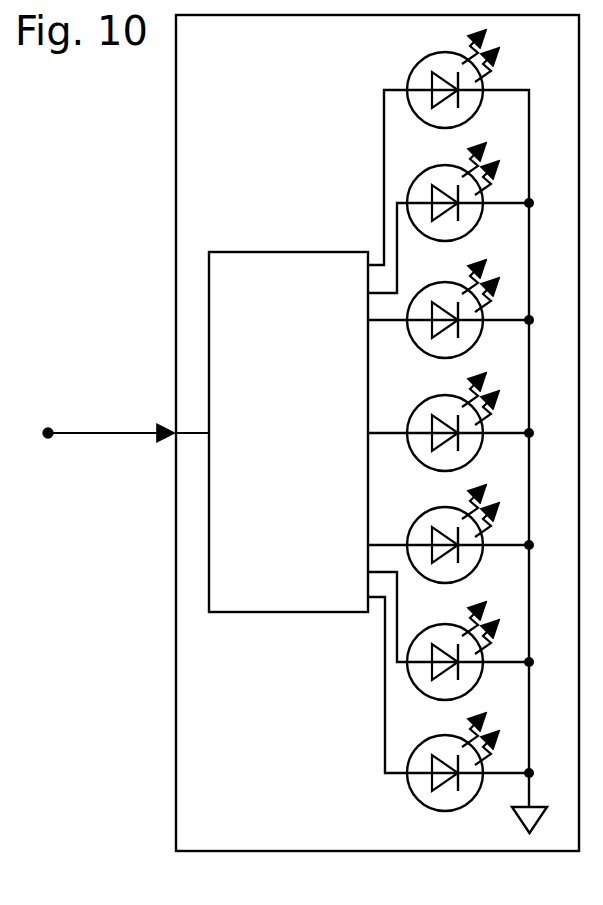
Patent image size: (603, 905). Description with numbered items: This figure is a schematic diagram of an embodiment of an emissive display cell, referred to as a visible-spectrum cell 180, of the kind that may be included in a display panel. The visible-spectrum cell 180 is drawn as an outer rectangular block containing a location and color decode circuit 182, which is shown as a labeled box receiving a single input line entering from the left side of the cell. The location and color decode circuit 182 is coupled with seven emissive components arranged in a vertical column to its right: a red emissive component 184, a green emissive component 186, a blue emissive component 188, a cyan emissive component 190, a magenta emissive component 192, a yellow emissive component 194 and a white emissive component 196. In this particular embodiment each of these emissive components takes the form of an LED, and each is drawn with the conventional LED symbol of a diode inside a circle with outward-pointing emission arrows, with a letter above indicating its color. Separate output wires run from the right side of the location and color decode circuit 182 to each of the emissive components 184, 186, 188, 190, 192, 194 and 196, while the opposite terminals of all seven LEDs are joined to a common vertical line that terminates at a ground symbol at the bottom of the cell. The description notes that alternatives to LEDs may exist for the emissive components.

The visible-spectrum cell 180 is at (132, 181).
The location and color decode circuit 182 is at (360, 281).
The red emissive component 184 is at (483, 83).
The green emissive component 186 is at (483, 196).
The blue emissive component 188 is at (483, 313).
The cyan emissive component 190 is at (483, 426).
The magenta emissive component 192 is at (483, 538).
The yellow emissive component 194 is at (483, 655).
The white emissive component 196 is at (483, 766).